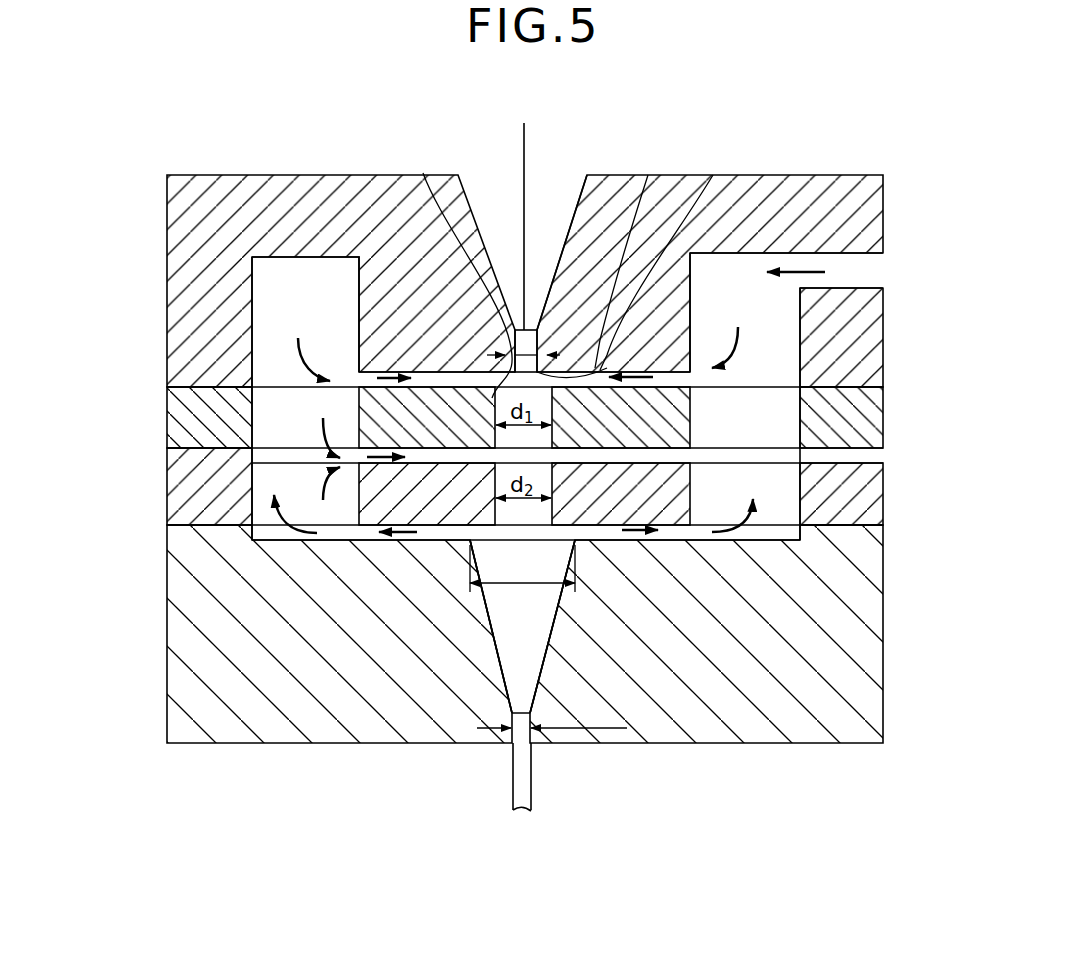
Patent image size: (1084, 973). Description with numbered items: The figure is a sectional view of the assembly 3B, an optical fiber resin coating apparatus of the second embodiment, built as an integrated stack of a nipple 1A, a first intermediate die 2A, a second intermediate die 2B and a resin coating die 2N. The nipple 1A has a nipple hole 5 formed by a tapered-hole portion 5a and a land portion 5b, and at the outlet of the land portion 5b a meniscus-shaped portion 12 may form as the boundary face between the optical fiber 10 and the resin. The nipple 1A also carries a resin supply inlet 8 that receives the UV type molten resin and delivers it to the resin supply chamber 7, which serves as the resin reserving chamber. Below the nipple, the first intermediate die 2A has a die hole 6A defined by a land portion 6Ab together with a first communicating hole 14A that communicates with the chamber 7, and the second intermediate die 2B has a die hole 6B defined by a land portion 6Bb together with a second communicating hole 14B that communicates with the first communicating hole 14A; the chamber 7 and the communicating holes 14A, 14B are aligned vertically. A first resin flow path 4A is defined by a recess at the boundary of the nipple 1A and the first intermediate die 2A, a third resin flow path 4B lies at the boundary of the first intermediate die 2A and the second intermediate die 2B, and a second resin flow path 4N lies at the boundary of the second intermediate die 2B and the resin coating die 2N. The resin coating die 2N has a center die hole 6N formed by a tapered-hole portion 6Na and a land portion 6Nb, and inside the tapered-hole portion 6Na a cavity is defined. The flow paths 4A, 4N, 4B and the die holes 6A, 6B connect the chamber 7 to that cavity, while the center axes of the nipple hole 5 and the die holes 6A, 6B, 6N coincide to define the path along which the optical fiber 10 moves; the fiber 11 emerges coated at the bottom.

The nipple 1A is at (860, 216).
The first intermediate die 2A is at (878, 432).
The second intermediate die 2B is at (863, 497).
The resin coating die 2N is at (868, 648).
The assembly 3B is at (892, 542).
The first resin flow path 4A is at (507, 341).
The third resin flow path 4B is at (427, 417).
The second resin flow path 4N is at (427, 494).
The nipple hole 5 is at (673, 127).
The tapered-hole portion 5a is at (553, 193).
The land portion 5b is at (648, 175).
The die hole 6A is at (497, 403).
The land portion 6Ab is at (423, 173).
The die hole 6B is at (503, 521).
The land portion 6Bb is at (548, 522).
The center die hole 6N is at (445, 820).
The tapered-hole portion 6Na is at (503, 623).
The land portion 6Nb is at (510, 733).
The resin supply chamber 7 is at (305, 303).
The resin supply inlet 8 is at (870, 268).
The optical fiber 10 is at (523, 138).
The extruded product 11 is at (531, 793).
The meniscus-shaped portion 12 is at (713, 175).
The first communicating hole 14A is at (270, 422).
The second communicating hole 14B is at (270, 505).